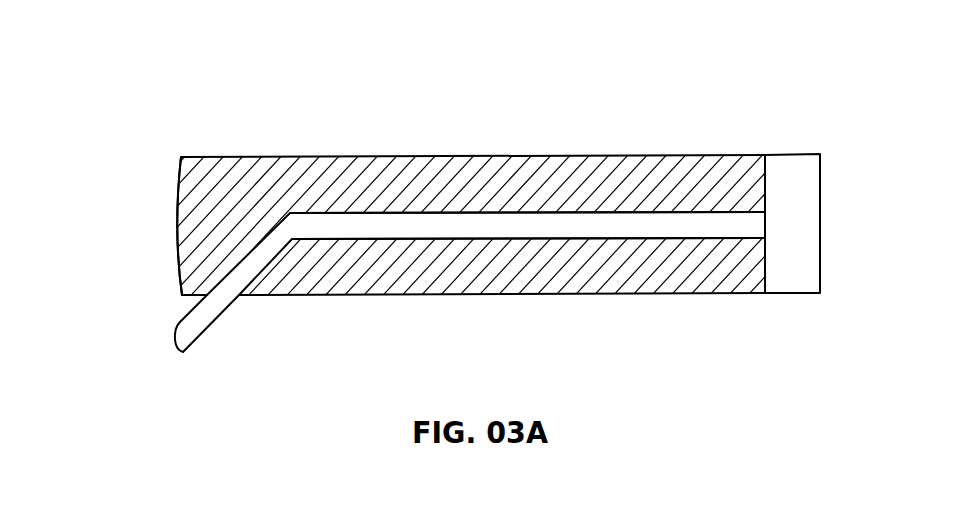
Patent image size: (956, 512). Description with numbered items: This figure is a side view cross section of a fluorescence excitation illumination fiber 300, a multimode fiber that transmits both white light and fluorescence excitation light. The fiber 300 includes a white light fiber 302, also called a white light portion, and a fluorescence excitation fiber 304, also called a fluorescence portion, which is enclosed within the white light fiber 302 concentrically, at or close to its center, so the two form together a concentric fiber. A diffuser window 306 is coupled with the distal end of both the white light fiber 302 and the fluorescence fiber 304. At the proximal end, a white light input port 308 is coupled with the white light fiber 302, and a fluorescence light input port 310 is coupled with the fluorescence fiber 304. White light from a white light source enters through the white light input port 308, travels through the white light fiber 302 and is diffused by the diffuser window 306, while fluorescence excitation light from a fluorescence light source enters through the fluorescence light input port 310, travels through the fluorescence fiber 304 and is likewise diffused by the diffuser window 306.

The fluorescence excitation illumination fiber 300 is at (458, 100).
The white light fiber 302 is at (460, 295).
The fluorescence excitation fiber 304 is at (555, 239).
The diffuser window 306 is at (793, 294).
The white light input port 308 is at (168, 227).
The fluorescence light input port 310 is at (168, 337).